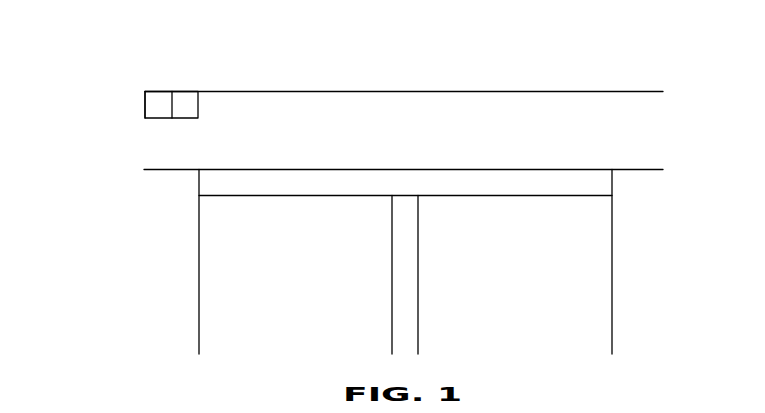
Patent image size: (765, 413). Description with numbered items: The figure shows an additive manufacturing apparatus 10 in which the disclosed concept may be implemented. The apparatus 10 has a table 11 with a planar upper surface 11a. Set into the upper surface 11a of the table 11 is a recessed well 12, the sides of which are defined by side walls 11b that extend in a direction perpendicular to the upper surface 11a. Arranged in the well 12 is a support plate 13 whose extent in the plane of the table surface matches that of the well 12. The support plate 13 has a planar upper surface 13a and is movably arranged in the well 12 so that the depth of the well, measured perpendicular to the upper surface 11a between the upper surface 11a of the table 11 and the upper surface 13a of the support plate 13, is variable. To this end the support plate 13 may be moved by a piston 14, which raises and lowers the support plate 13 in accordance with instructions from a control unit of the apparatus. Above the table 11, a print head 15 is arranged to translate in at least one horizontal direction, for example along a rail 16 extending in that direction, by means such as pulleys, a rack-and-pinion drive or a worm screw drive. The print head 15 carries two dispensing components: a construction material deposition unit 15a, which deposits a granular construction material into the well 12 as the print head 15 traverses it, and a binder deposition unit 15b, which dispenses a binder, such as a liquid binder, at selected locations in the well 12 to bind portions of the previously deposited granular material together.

The apparatus 10 is at (661, 66).
The table 11 is at (431, 228).
The upper surface 11a is at (642, 167).
The side walls 11b is at (614, 293).
The recessed well 12 is at (580, 167).
The support plate 13 is at (260, 192).
The upper surface of support plate 13a is at (207, 167).
The piston 14 is at (397, 295).
The print head 15 is at (147, 90).
The construction material deposition unit 15a is at (187, 113).
The binder deposition unit 15b is at (148, 105).
The rail 16 is at (369, 90).